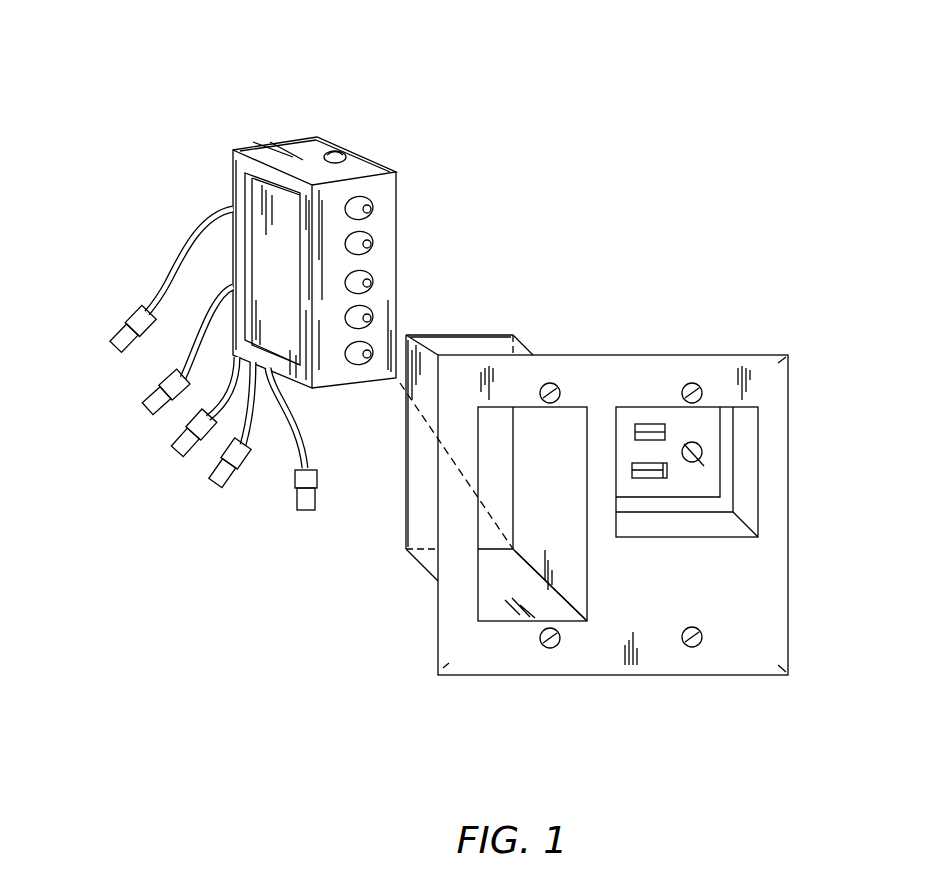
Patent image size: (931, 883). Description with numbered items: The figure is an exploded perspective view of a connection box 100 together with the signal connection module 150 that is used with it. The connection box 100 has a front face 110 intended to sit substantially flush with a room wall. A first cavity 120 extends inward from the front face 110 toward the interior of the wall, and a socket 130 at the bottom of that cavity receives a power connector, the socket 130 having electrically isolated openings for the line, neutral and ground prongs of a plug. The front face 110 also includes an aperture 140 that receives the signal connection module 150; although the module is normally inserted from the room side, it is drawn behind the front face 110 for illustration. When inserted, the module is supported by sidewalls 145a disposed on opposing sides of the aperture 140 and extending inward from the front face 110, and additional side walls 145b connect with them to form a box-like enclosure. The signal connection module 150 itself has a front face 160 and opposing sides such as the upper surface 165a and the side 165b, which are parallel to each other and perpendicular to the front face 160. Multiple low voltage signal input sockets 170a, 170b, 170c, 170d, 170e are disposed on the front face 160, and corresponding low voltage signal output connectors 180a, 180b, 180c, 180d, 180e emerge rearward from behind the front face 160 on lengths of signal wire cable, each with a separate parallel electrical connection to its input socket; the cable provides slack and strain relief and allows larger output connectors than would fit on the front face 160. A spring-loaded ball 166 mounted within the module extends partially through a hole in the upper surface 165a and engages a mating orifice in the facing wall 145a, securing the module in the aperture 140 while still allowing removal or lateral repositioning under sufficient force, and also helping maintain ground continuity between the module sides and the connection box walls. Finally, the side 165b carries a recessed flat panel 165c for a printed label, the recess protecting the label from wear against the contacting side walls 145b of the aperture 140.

The connection box 100 is at (645, 290).
The front face 110 is at (735, 588).
The first cavity 120 is at (748, 453).
The socket 130 is at (651, 410).
The aperture 140 is at (493, 613).
The sidewall 145a is at (500, 343).
The side wall 145b is at (417, 527).
The signal connection module 150 is at (482, 120).
The front face 160 is at (327, 380).
The upper surface 165a is at (308, 147).
The side 165b is at (243, 178).
The recessed flat panel 165c is at (263, 200).
The spring-loaded ball 166 is at (358, 152).
The low voltage signal input socket 170a is at (377, 209).
The low voltage signal input socket 170b is at (377, 243).
The low voltage signal input socket 170c is at (377, 283).
The low voltage signal input socket 170d is at (377, 318).
The low voltage signal input socket 170e is at (368, 364).
The low voltage signal output connector 180a is at (115, 345).
The low voltage signal output connector 180b is at (143, 410).
The low voltage signal output connector 180c is at (170, 452).
The low voltage signal output connector 180d is at (218, 488).
The low voltage signal output connector 180e is at (305, 512).